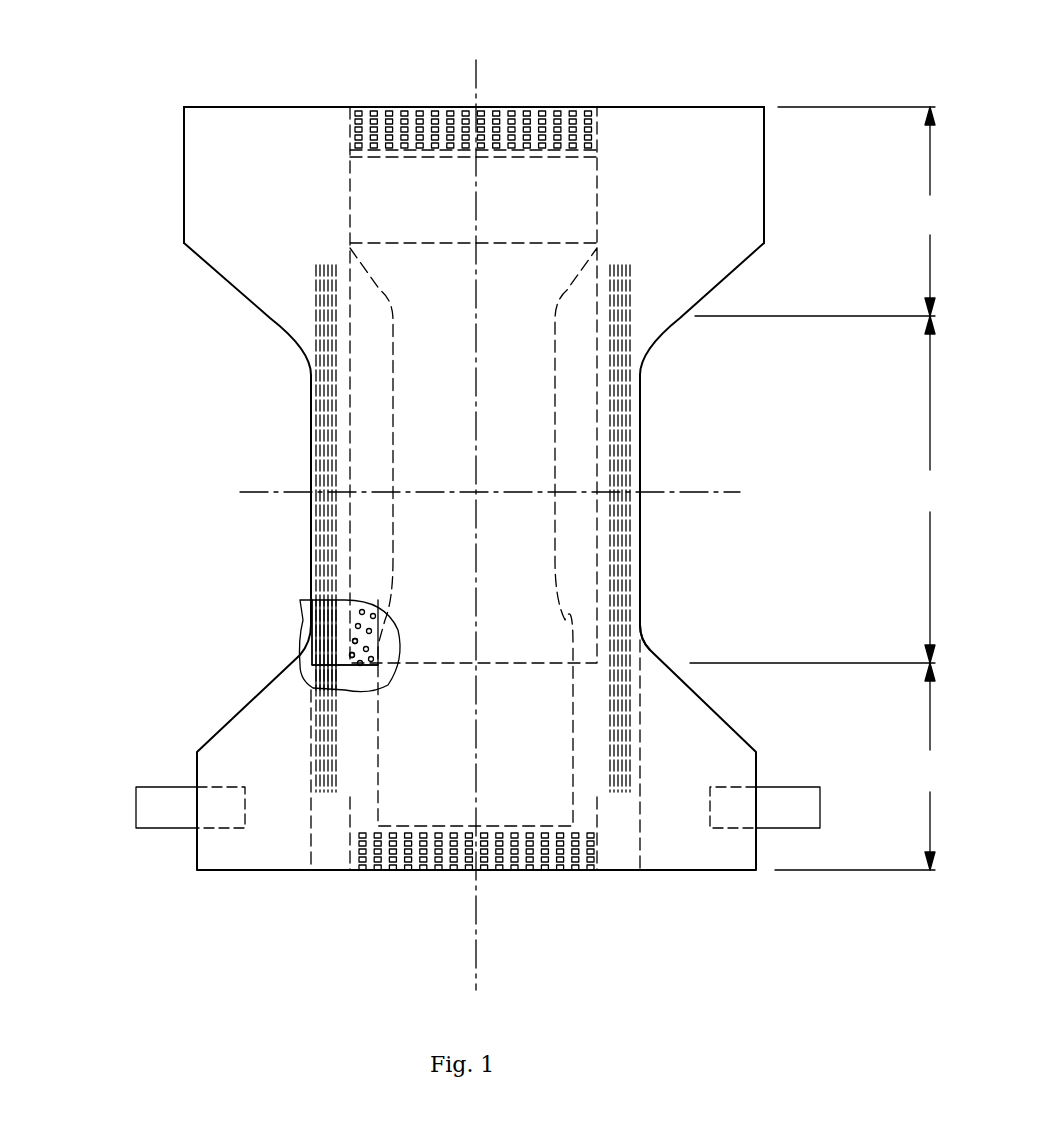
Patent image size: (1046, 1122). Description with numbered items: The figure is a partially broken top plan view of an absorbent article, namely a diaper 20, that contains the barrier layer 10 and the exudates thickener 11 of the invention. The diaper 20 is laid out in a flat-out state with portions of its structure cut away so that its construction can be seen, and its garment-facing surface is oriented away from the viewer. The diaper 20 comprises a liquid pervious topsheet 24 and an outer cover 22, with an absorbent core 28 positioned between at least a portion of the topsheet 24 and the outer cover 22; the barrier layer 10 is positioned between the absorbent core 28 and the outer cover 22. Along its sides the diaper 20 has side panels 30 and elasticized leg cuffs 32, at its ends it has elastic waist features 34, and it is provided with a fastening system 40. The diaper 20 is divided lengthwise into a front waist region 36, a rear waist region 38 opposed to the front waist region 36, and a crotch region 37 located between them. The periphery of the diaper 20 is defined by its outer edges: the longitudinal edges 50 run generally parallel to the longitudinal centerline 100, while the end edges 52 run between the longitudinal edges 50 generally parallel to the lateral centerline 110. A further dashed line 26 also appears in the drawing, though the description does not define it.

The barrier layer 10 is at (358, 660).
The exudates thickener 11 is at (380, 644).
The diaper 20 is at (162, 106).
The outer cover 22 is at (222, 210).
The liquid pervious topsheet 24 is at (510, 378).
The backsheet 26 is at (325, 862).
The absorbent core 28 is at (352, 640).
The side panels 30 is at (272, 145).
The elasticized leg cuffs 32 is at (640, 640).
The elastic waist features 34 is at (566, 110).
The front waist region 36 is at (820, 211).
The crotch region 37 is at (817, 489).
The rear waist region 38 is at (860, 766).
The fastening system 40 is at (163, 838).
The longitudinal edges 50 is at (311, 410).
The end edges 52 is at (422, 107).
The longitudinal centerline 100 is at (476, 75).
The lateral centerline 110 is at (705, 492).